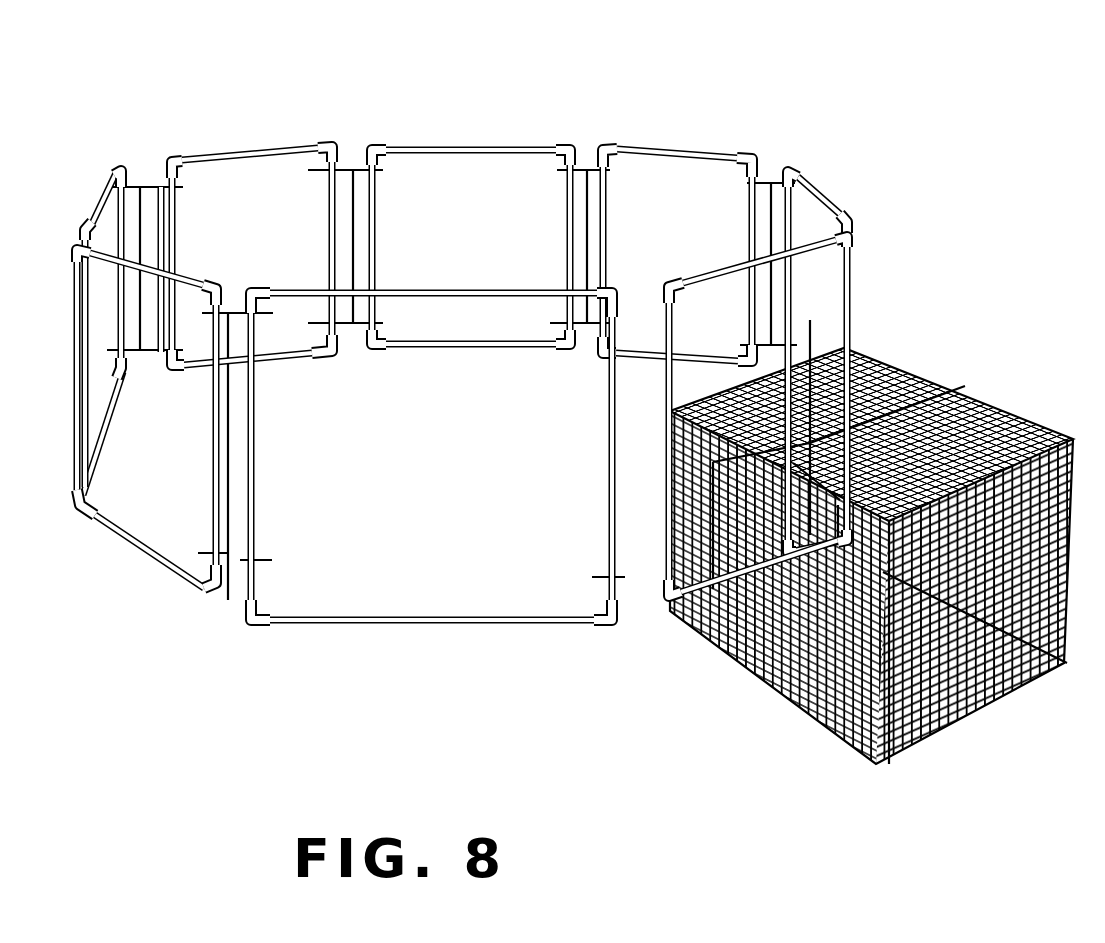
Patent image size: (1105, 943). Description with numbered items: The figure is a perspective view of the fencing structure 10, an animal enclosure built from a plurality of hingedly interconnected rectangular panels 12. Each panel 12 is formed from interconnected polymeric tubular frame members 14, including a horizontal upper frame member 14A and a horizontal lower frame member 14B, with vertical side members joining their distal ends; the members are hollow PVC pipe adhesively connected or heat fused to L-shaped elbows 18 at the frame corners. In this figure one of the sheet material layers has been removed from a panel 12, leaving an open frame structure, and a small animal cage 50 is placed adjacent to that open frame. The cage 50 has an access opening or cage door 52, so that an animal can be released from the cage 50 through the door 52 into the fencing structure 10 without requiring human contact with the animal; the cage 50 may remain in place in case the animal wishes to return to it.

The fencing structure 10 is at (454, 366).
The rectangular panel 12 is at (357, 454).
The tubular frame member 14 is at (354, 203).
The horizontal upper frame member 14A is at (263, 150).
The horizontal lower frame member 14B is at (491, 626).
The L-shaped elbow 18 is at (251, 282).
The small animal cage 50 is at (871, 537).
The cage door 52 is at (915, 412).